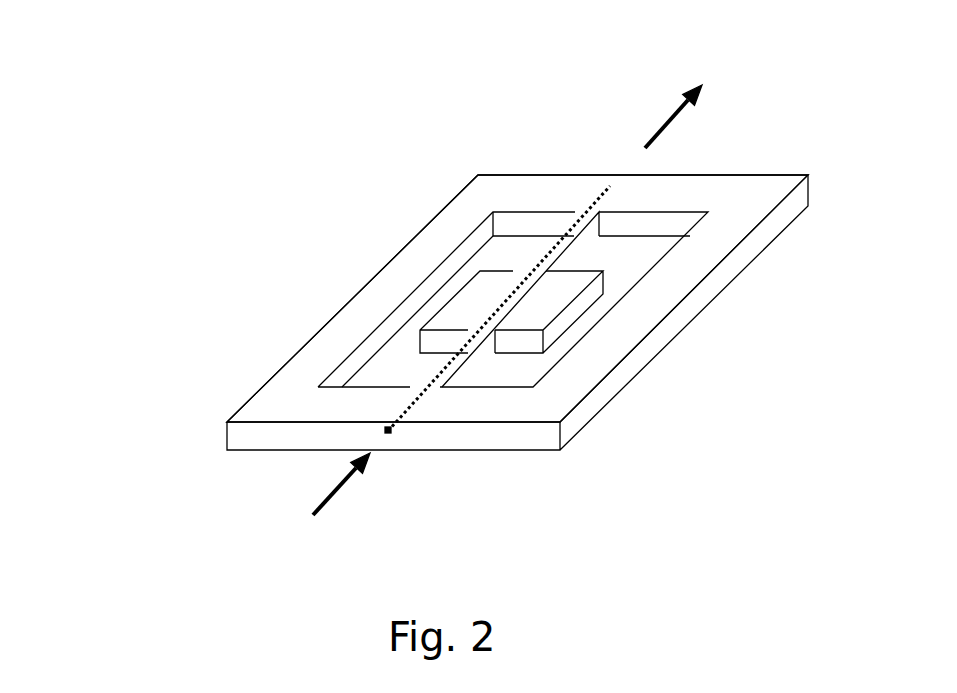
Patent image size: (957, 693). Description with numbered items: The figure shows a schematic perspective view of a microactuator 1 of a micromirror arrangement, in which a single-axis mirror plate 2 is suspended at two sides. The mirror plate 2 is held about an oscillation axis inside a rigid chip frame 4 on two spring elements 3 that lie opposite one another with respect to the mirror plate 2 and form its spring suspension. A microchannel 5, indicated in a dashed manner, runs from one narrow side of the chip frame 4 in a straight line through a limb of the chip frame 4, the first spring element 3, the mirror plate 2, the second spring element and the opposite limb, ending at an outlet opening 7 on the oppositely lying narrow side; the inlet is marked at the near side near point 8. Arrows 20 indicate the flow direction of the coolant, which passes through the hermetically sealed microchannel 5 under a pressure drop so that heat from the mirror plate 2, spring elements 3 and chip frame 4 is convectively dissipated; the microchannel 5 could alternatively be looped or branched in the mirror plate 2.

The microactuator 1 is at (228, 432).
The mirror plate 2 is at (450, 313).
The spring element 3 is at (585, 242).
The chip frame 4 is at (583, 378).
The microchannel 5 is at (507, 293).
The outlet opening 7 is at (612, 186).
The beam entry point 8 is at (393, 433).
The arrows 20 is at (332, 503).